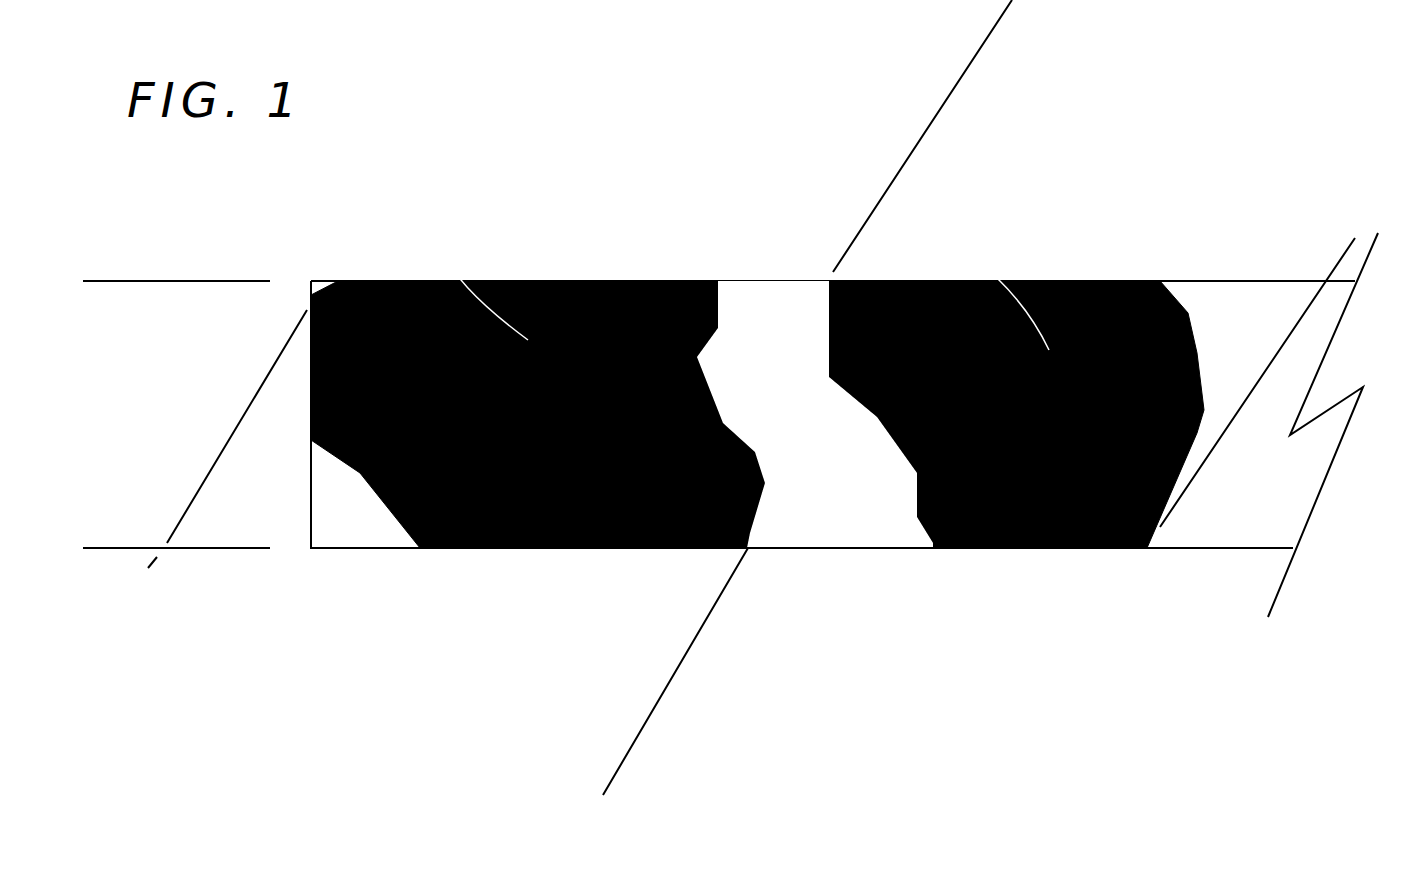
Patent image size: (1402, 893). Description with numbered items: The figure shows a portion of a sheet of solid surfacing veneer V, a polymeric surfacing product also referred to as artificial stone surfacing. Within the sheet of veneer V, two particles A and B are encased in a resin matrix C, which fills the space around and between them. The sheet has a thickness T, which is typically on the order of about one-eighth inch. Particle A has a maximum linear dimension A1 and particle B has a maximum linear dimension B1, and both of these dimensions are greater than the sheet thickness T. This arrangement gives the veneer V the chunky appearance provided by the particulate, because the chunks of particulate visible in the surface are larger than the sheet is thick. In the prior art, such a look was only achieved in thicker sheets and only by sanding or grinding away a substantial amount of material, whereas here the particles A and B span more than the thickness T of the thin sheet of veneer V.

The particle A is at (440, 235).
The particle B is at (997, 278).
The resin matrix C is at (768, 317).
The sheet of veneer V is at (866, 572).
The sheet thickness T is at (89, 281).
The maximum linear dimension of particle A A1 is at (612, 775).
The maximum linear dimension of particle B B1 is at (1013, 10).